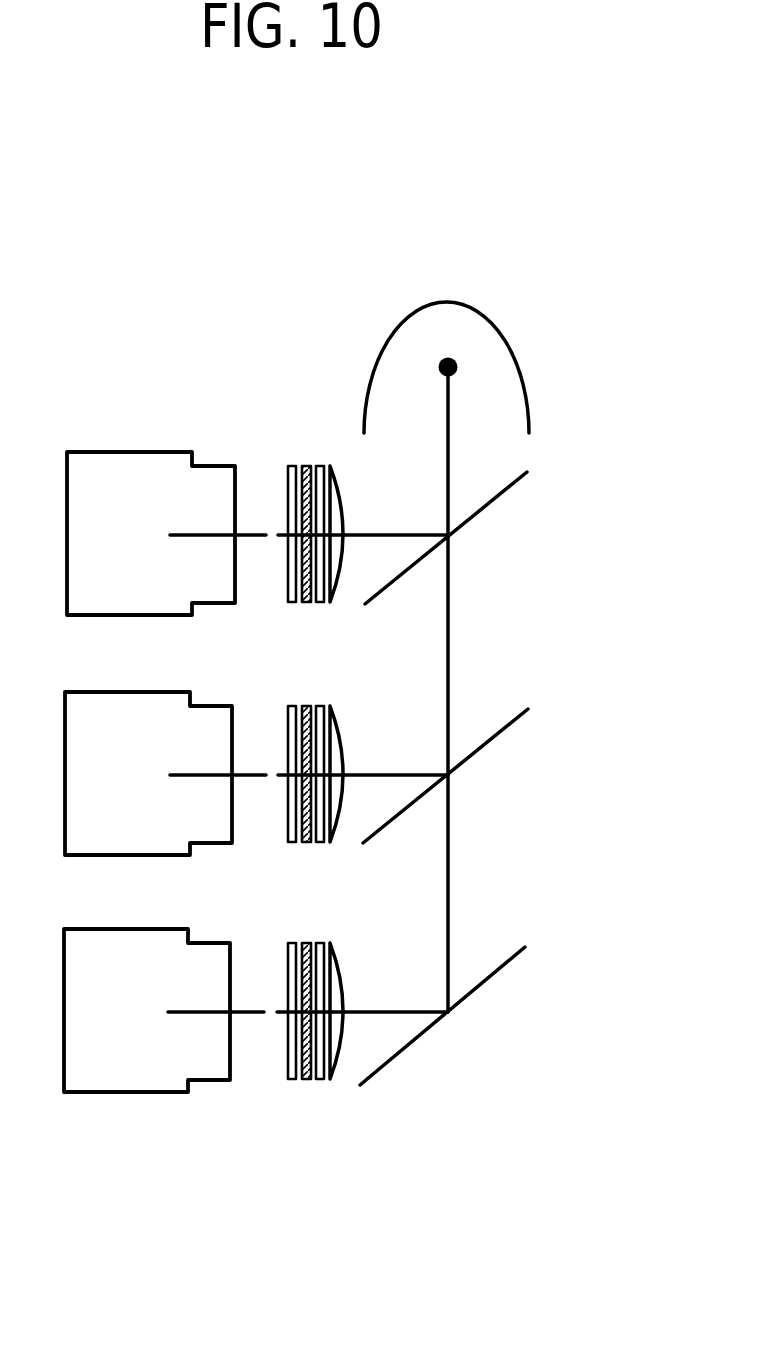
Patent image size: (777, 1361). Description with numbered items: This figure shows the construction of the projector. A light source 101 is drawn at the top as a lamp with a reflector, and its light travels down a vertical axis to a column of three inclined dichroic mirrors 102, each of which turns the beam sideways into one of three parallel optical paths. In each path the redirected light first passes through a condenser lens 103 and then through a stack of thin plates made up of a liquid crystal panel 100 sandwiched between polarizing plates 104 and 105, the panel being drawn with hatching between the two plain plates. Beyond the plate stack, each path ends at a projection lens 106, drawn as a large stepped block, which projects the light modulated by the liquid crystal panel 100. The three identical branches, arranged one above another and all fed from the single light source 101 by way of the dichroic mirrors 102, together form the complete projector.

The liquid crystal panel 100 is at (287, 1080).
The light source 101 is at (518, 363).
The dichroic mirror 102 is at (463, 998).
The condenser lens 103 is at (338, 1068).
The polarizing plate 104 is at (320, 1078).
The polarizing plate 105 is at (303, 1080).
The projection lens 106 is at (108, 1083).